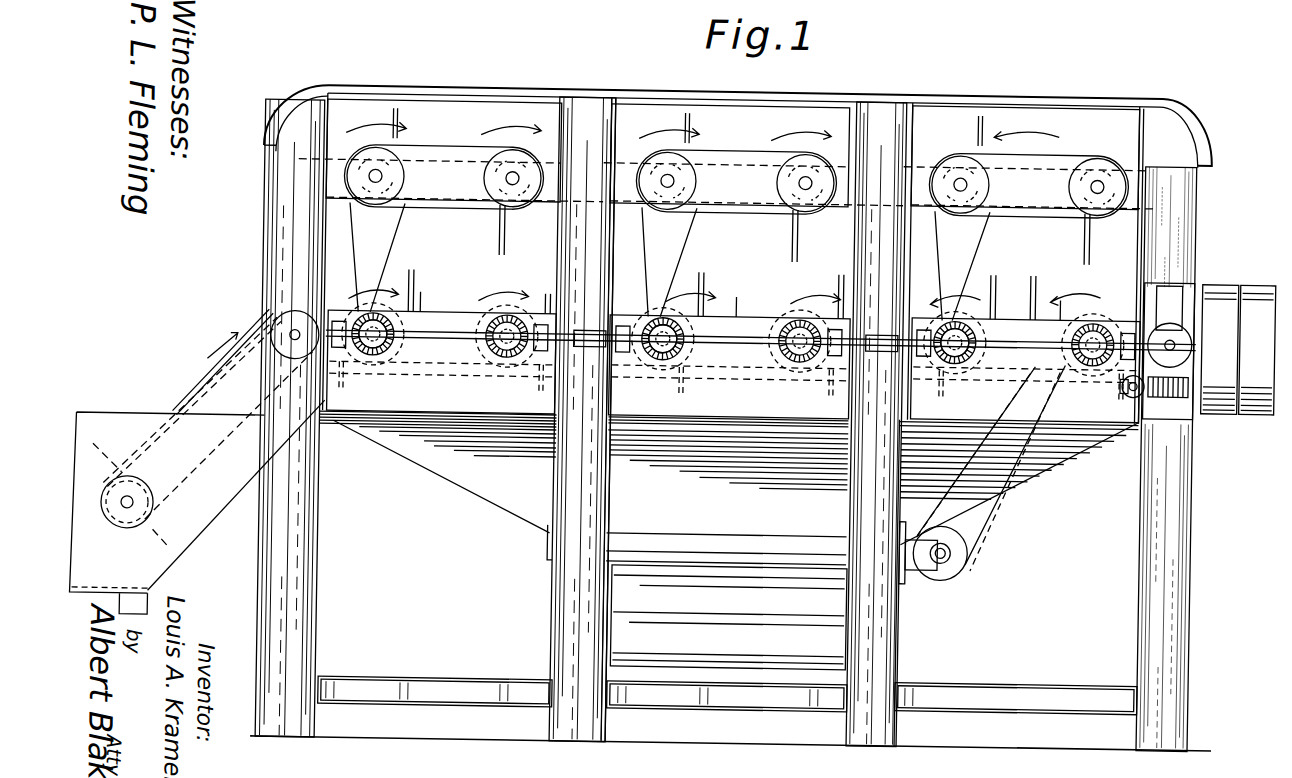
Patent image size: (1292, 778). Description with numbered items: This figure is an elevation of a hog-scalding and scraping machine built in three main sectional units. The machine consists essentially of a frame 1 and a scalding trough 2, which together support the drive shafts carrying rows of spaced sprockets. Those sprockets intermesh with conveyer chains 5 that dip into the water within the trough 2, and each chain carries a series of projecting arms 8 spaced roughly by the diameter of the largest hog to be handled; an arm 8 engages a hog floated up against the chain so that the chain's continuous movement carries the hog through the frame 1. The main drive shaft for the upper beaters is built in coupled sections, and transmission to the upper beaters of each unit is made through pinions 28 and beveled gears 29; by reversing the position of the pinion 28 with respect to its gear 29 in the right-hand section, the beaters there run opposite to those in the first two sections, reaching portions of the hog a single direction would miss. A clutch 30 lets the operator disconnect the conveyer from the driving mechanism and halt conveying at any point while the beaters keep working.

The frame 1 is at (343, 587).
The scalding trough 2 is at (204, 505).
The conveyer chains 5 is at (203, 395).
The projecting arms 8 is at (211, 378).
The pinions 28 is at (404, 318).
The beveled gears 29 is at (368, 352).
The clutch 30 is at (1148, 378).